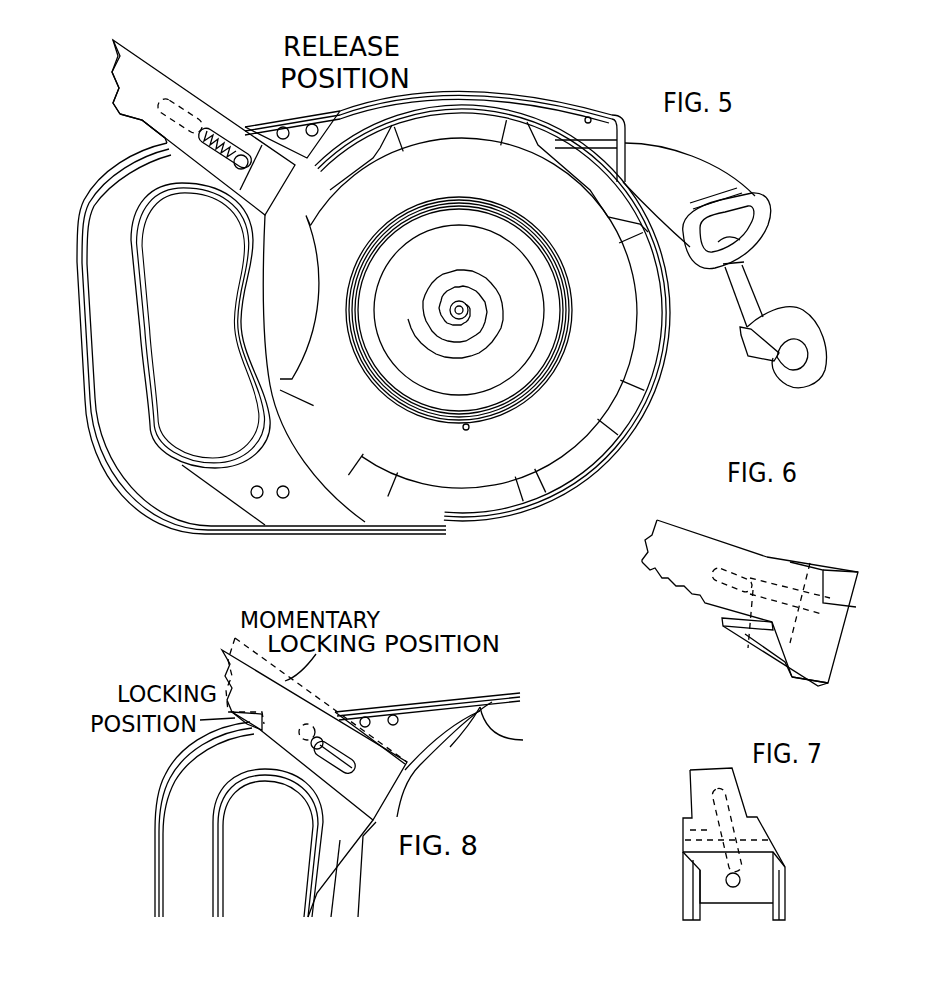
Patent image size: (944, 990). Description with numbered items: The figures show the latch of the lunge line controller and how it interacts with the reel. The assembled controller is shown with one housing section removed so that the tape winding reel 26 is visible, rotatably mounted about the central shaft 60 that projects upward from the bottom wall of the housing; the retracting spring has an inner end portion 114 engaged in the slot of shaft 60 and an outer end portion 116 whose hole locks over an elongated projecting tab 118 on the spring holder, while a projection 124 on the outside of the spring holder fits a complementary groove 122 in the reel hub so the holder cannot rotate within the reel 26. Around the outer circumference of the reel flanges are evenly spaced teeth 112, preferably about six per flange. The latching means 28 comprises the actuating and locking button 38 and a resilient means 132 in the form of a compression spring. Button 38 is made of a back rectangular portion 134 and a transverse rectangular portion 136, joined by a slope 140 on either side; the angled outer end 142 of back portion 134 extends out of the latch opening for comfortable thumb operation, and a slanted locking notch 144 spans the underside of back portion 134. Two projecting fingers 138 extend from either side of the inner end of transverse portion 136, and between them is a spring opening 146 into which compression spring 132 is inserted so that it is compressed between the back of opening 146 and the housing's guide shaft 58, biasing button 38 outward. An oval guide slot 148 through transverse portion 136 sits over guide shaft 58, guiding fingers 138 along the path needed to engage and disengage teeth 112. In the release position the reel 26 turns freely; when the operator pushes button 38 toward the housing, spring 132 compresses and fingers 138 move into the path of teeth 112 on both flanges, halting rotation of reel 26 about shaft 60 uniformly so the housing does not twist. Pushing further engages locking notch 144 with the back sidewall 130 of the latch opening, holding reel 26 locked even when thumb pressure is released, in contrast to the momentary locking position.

In FIG. 5, the tape winding reel 26 is at (466, 146).
In FIG. 5, the latching means 28 is at (237, 135).
In FIG. 5, the actuating and locking button 38 is at (138, 67).
In FIG. 6, the actuating and locking button 38 is at (642, 550).
In FIG. 7, the actuating and locking button 38 is at (767, 830).
In FIG. 8, the guide shaft 58 is at (320, 735).
In FIG. 5, the shaft 60 is at (467, 303).
In FIG. 8, the teeth 112 is at (474, 713).
In FIG. 5, the inner end portion 114 is at (466, 318).
In FIG. 5, the outer end portion 116 is at (352, 323).
In FIG. 5, the elongated projecting tab 118 is at (350, 308).
In FIG. 5, the groove 122 is at (462, 427).
In FIG. 5, the projection 124 is at (470, 430).
In FIG. 5, the back sidewall 130 is at (168, 130).
In FIG. 8, the back sidewall 130 is at (247, 730).
In FIG. 5, the resilient means 132 is at (212, 134).
In FIG. 6, the back rectangular portion 134 is at (723, 557).
In FIG. 7, the back rectangular portion 134 is at (703, 790).
In FIG. 6, the transverse rectangular portion 136 is at (808, 565).
In FIG. 7, the transverse rectangular portion 136 is at (687, 833).
In FIG. 6, the projecting fingers 138 is at (850, 590).
In FIG. 7, the projecting fingers 138 is at (683, 900).
In FIG. 6, the slope 140 is at (733, 624).
In FIG. 5, the outer end 142 is at (118, 80).
In FIG. 6, the outer end 142 is at (647, 568).
In FIG. 5, the locking notch 144 is at (147, 117).
In FIG. 6, the locking notch 144 is at (697, 603).
In FIG. 7, the spring opening 146 is at (738, 884).
In FIG. 6, the oval guide slot 148 is at (777, 653).
In FIG. 8, the oval guide slot 148 is at (358, 763).